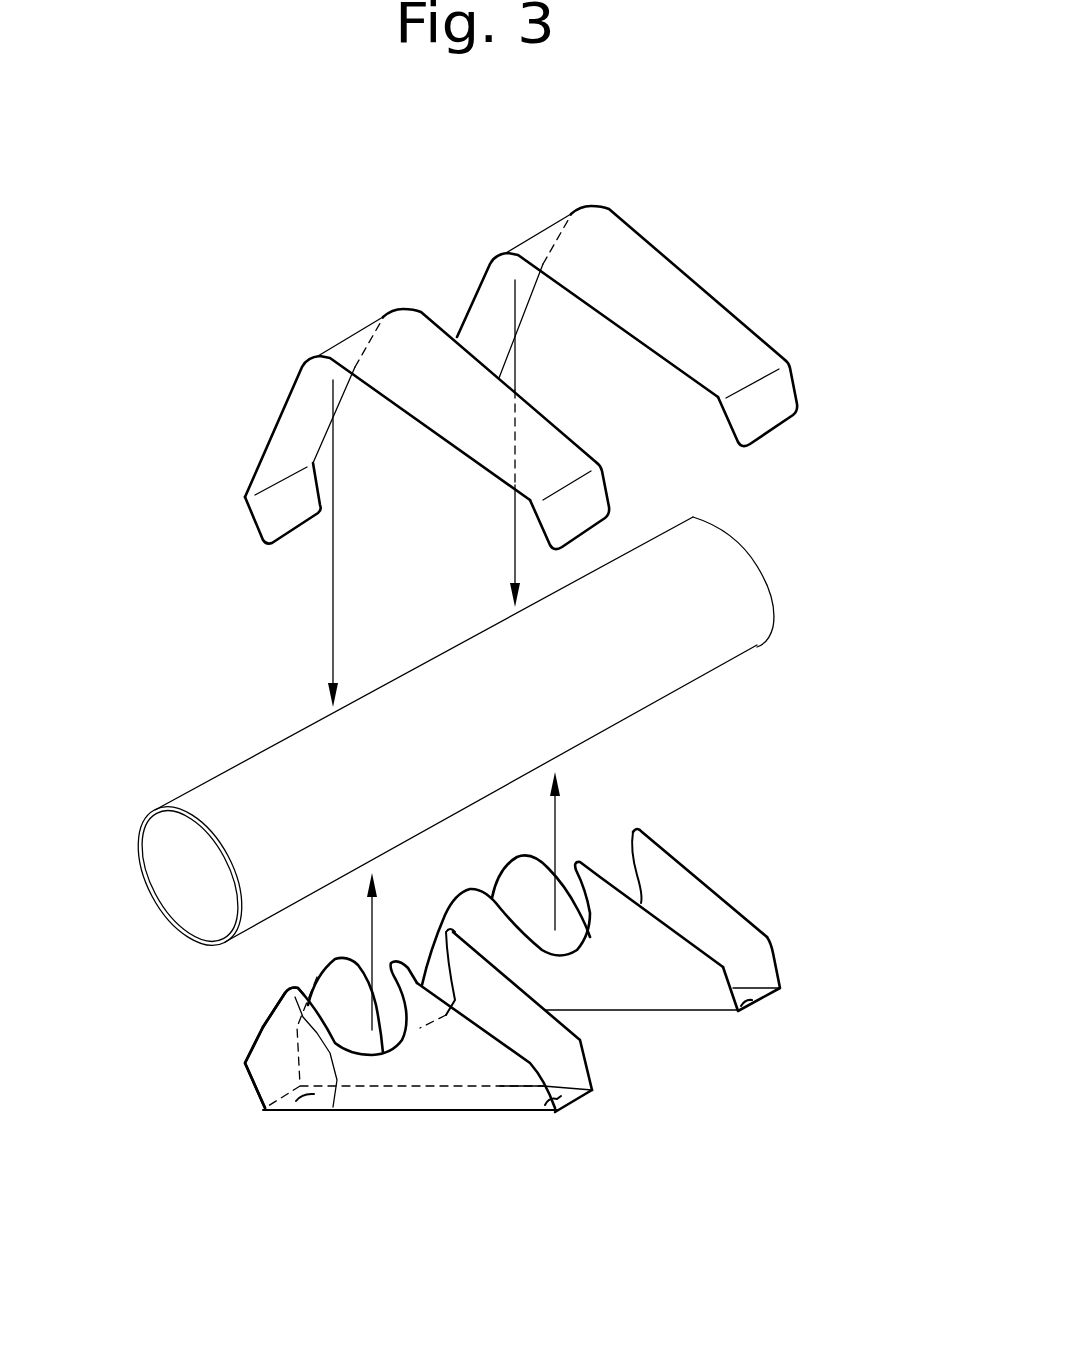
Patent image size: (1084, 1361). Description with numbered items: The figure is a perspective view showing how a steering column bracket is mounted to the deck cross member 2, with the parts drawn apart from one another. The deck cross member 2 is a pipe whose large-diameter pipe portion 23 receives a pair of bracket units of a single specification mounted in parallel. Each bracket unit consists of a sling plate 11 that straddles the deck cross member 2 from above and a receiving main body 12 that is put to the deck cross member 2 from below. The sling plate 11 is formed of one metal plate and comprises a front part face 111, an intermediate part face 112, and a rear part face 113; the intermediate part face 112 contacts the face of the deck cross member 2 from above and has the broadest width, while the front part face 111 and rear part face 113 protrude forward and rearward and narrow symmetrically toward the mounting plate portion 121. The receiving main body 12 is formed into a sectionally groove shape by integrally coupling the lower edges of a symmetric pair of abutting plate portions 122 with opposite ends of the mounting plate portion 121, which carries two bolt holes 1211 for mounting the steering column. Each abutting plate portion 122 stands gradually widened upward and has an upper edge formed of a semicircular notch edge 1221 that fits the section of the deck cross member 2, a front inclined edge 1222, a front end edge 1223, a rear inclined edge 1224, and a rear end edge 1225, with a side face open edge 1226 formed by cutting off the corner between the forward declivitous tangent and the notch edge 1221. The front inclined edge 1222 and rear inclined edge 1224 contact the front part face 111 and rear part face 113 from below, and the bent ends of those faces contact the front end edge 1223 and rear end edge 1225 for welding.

The deck cross member 2 is at (170, 780).
The large-diameter pipe portion 23 is at (231, 769).
The sling plate 11 is at (290, 385).
The front part face 111 is at (262, 457).
The intermediate part face 112 is at (355, 333).
The rear part face 113 is at (467, 433).
The receiving main body 12 is at (687, 893).
The mounting plate portion 121 is at (773, 998).
The bolt hole 1211 is at (755, 1000).
The abutting plate portion 122 is at (708, 925).
The notch edge 1221 is at (325, 972).
The front inclined edge 1222 is at (263, 1030).
The front end edge 1223 is at (262, 1092).
The rear inclined edge 1224 is at (480, 1113).
The rear end edge 1225 is at (545, 1087).
The side face open edge 1226 is at (333, 1107).